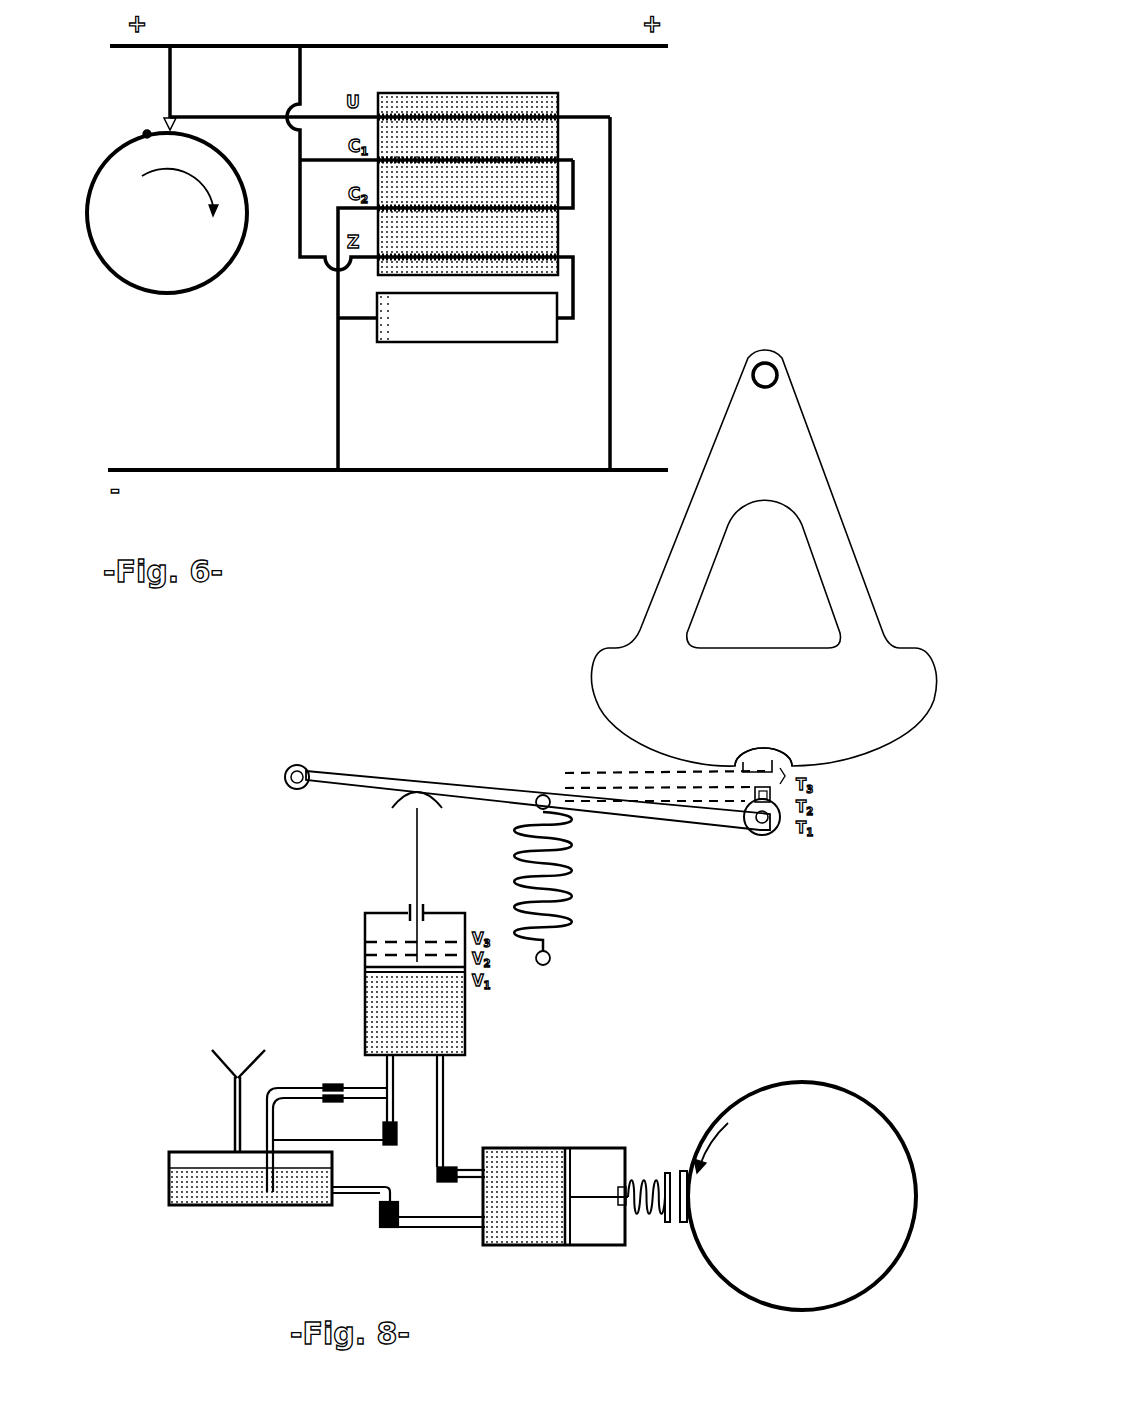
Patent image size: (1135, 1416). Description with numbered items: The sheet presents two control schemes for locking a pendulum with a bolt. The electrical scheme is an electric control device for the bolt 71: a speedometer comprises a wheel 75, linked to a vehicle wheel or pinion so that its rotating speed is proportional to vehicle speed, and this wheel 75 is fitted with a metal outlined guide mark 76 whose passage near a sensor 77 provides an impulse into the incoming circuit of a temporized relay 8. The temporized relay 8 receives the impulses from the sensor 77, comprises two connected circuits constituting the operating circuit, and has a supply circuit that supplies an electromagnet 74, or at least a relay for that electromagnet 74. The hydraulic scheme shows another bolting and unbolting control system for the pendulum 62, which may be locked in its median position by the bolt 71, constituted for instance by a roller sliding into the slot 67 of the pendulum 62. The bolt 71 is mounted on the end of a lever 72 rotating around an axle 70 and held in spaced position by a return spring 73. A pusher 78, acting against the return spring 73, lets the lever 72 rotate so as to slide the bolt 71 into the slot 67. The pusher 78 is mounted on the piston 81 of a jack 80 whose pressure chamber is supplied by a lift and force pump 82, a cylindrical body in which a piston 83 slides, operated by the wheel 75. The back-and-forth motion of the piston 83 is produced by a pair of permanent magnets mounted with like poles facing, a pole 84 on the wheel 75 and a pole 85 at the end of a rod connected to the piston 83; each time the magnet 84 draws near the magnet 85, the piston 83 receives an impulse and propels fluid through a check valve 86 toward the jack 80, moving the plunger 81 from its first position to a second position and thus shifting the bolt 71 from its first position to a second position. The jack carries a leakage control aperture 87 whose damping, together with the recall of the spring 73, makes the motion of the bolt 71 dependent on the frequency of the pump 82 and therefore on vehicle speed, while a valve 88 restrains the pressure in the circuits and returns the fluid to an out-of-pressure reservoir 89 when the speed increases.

In FIG. 6, the temporized relay 8 is at (473, 92).
In FIG. 8, the pendulum 62 is at (838, 720).
In FIG. 8, the slot 67 is at (765, 735).
In FIG. 8, the axle 70 is at (297, 790).
In FIG. 8, the bolt 71 is at (752, 836).
In FIG. 8, the lever 72 is at (697, 826).
In FIG. 8, the return spring 73 is at (572, 930).
In FIG. 6, the electromagnet 74 is at (480, 342).
In FIG. 6, the wheel 75 is at (208, 290).
In FIG. 8, the wheel 75 is at (690, 1232).
In FIG. 6, the guide mark 76 is at (144, 133).
In FIG. 6, the sensor 77 is at (163, 124).
In FIG. 8, the pusher 78 is at (417, 855).
In FIG. 8, the jack 80 is at (365, 996).
In FIG. 8, the piston 81 is at (385, 962).
In FIG. 8, the lift and force pump 82 is at (590, 1247).
In FIG. 8, the piston 83 is at (567, 1247).
In FIG. 8, the magnet 84 is at (683, 1172).
In FIG. 8, the magnet 85 is at (665, 1178).
In FIG. 8, the check valve 86 is at (447, 1167).
In FIG. 8, the leakage control aperture 87 is at (333, 1085).
In FIG. 8, the valve 88 is at (417, 1128).
In FIG. 8, the reservoir 89 is at (243, 1207).